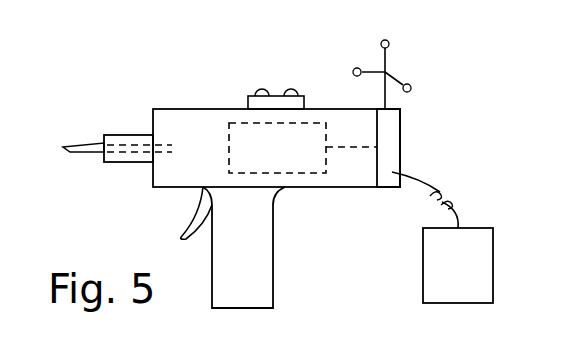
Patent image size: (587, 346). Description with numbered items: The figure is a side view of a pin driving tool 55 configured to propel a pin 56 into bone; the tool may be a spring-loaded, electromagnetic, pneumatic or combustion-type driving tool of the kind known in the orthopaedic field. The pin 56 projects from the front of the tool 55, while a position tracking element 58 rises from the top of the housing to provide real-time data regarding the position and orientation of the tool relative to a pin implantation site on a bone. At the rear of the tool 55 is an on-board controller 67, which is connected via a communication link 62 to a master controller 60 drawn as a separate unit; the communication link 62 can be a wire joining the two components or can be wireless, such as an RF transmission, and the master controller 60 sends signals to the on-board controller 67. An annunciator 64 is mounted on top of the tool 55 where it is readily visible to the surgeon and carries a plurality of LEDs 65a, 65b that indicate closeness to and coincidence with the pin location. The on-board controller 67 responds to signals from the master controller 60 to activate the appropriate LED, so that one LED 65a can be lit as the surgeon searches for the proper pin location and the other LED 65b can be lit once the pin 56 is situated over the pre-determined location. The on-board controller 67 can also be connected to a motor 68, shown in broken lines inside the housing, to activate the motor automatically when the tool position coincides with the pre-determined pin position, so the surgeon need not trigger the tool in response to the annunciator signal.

The pin driving tool 55 is at (202, 115).
The pin 56 is at (88, 130).
The position tracking element 58 is at (388, 60).
The master controller 60 is at (442, 260).
The communication link 62 is at (427, 175).
The annunciator 64 is at (298, 100).
The LED 65a is at (260, 88).
The LED 65b is at (291, 88).
The on-board controller 67 is at (400, 130).
The motor 68 is at (287, 160).